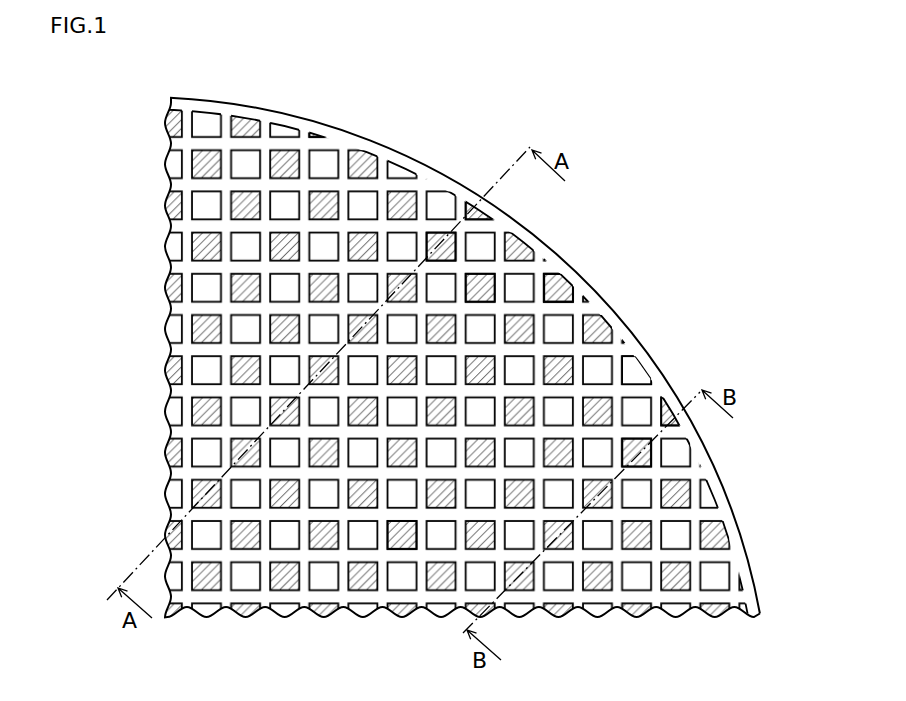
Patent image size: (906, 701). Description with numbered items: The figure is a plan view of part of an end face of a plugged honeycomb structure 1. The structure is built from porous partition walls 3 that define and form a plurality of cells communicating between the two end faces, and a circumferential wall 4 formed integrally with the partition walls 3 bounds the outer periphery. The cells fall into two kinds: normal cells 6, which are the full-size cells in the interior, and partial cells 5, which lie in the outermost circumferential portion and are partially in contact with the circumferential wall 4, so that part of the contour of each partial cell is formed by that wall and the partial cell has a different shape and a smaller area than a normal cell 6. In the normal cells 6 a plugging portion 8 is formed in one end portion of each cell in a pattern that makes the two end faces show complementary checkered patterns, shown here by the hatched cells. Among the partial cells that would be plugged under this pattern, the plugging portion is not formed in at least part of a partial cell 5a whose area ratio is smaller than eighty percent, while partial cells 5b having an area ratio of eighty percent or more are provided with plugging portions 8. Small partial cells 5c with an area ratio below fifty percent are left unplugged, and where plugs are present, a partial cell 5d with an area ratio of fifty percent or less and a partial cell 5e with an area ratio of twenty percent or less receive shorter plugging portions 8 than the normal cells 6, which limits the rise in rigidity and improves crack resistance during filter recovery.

The plugged honeycomb structure 1 is at (753, 546).
The porous partition walls 3 is at (403, 553).
The circumferential wall 4 is at (385, 154).
The partial cells 5 is at (385, 398).
The partial cell with area ratio smaller than 80% 5a is at (631, 370).
The partial cell with area ratio of 80% or more 5b is at (549, 280).
The partial cell with area ratio smaller than 50% 5c is at (321, 134).
The partial cell with area ratio of 50% or less 5d is at (468, 216).
The partial cell with area ratio of 20% or less 5e is at (666, 408).
The normal cells 6 is at (437, 240).
The plugging portion 8 is at (478, 285).